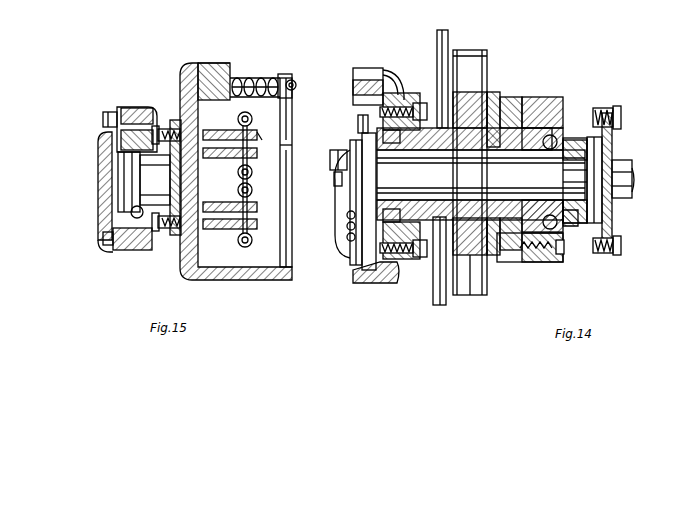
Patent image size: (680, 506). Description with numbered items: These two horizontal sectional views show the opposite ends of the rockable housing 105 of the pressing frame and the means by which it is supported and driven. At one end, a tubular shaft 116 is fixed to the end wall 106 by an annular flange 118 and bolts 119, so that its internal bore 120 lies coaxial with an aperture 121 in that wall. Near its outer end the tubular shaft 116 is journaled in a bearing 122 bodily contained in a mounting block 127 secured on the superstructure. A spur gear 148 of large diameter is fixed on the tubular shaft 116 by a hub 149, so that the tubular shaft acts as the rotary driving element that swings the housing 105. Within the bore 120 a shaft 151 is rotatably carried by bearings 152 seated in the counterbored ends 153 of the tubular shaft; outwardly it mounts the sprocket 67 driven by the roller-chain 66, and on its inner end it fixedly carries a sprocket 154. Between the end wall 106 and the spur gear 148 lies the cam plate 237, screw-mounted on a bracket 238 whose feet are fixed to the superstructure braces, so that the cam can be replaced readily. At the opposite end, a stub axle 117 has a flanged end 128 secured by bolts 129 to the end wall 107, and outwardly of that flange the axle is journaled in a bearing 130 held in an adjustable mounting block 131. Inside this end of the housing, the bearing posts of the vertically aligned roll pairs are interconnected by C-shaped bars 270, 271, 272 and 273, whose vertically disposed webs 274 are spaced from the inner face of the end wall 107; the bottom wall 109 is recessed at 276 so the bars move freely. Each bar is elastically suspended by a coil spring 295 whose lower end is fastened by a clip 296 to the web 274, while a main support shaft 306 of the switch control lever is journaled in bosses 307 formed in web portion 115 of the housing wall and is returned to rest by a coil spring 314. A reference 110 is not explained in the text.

In FIG. 14, the roller-chain 66 is at (622, 244).
In FIG. 14, the sprocket 67 is at (596, 162).
In FIG. 15, the housing 105 is at (214, 78).
In FIG. 14, the housing 105 is at (378, 74).
In FIG. 14, the end wall 106 is at (398, 92).
In FIG. 15, the end wall 107 is at (205, 66).
In FIG. 15, the bottom wall 109 is at (290, 122).
In FIG. 15, the housing 110 is at (225, 276).
In FIG. 15, the web portion 115 is at (266, 75).
In FIG. 14, the tubular shaft 116 is at (508, 97).
In FIG. 15, the stub axle 117 is at (137, 108).
In FIG. 14, the annular flange 118 is at (472, 92).
In FIG. 14, the bolts 119 is at (490, 92).
In FIG. 14, the internal bore 120 is at (546, 100).
In FIG. 14, the aperture 121 is at (376, 124).
In FIG. 14, the bearing 122 is at (566, 136).
In FIG. 14, the mounting block 127 is at (525, 128).
In FIG. 15, the flanged end 128 is at (174, 122).
In FIG. 15, the bolts 129 is at (162, 230).
In FIG. 15, the bearing 130 is at (98, 134).
In FIG. 15, the mounting block 131 is at (118, 118).
In FIG. 14, the spur gear 148 is at (466, 272).
In FIG. 14, the hub 149 is at (515, 258).
In FIG. 14, the shaft 151 is at (600, 128).
In FIG. 14, the bearings 152 is at (352, 250).
In FIG. 14, the counterbored ends 153 is at (385, 275).
In FIG. 14, the sprocket 154 is at (348, 200).
In FIG. 14, the cam plate 237 is at (436, 262).
In FIG. 14, the bracket 238 is at (446, 42).
In FIG. 15, the C-shaped bar 270 is at (218, 230).
In FIG. 15, the C-shaped bar 271 is at (252, 190).
In FIG. 15, the C-shaped bar 272 is at (252, 172).
In FIG. 15, the C-shaped bar 273 is at (220, 134).
In FIG. 15, the vertically disposed web 274 is at (218, 200).
In FIG. 15, the recess 276 is at (243, 258).
In FIG. 15, the coil spring 295 is at (252, 117).
In FIG. 15, the clip 296 is at (252, 122).
In FIG. 15, the main support shaft 306 is at (296, 81).
In FIG. 15, the bosses 307 is at (232, 63).
In FIG. 15, the coil spring 314 is at (293, 80).